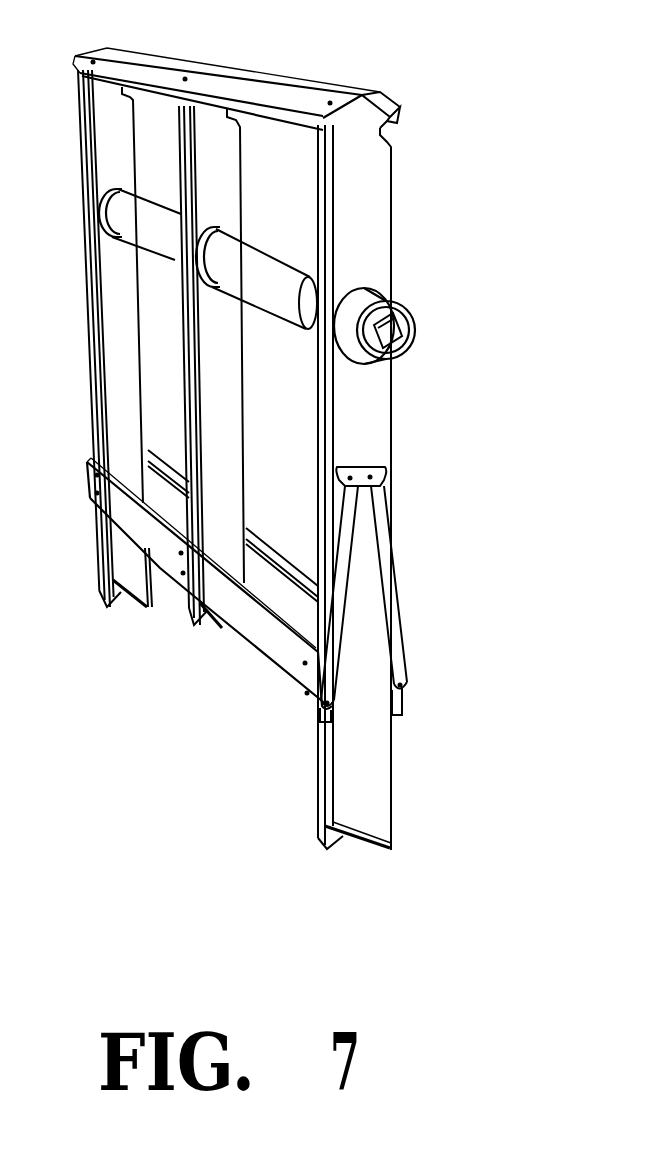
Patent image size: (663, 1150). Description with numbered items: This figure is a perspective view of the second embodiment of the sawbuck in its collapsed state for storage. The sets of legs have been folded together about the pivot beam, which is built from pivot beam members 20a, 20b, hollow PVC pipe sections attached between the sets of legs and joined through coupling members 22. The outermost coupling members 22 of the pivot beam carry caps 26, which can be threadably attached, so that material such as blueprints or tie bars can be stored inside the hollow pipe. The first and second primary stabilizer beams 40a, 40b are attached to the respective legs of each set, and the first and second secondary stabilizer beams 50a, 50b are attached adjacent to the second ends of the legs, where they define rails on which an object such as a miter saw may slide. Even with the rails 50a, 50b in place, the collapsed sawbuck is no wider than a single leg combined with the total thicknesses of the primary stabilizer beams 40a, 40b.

The first secondary stabilizer beam 50a is at (317, 100).
The second secondary stabilizer beam 50b is at (405, 110).
The coupling member 22 is at (100, 212).
The pivot beam member 20a is at (165, 244).
The pivot beam member 20b is at (290, 304).
The cap 26 is at (396, 332).
The first primary stabilizer beam 40a is at (287, 665).
The second primary stabilizer beam 40b is at (290, 554).